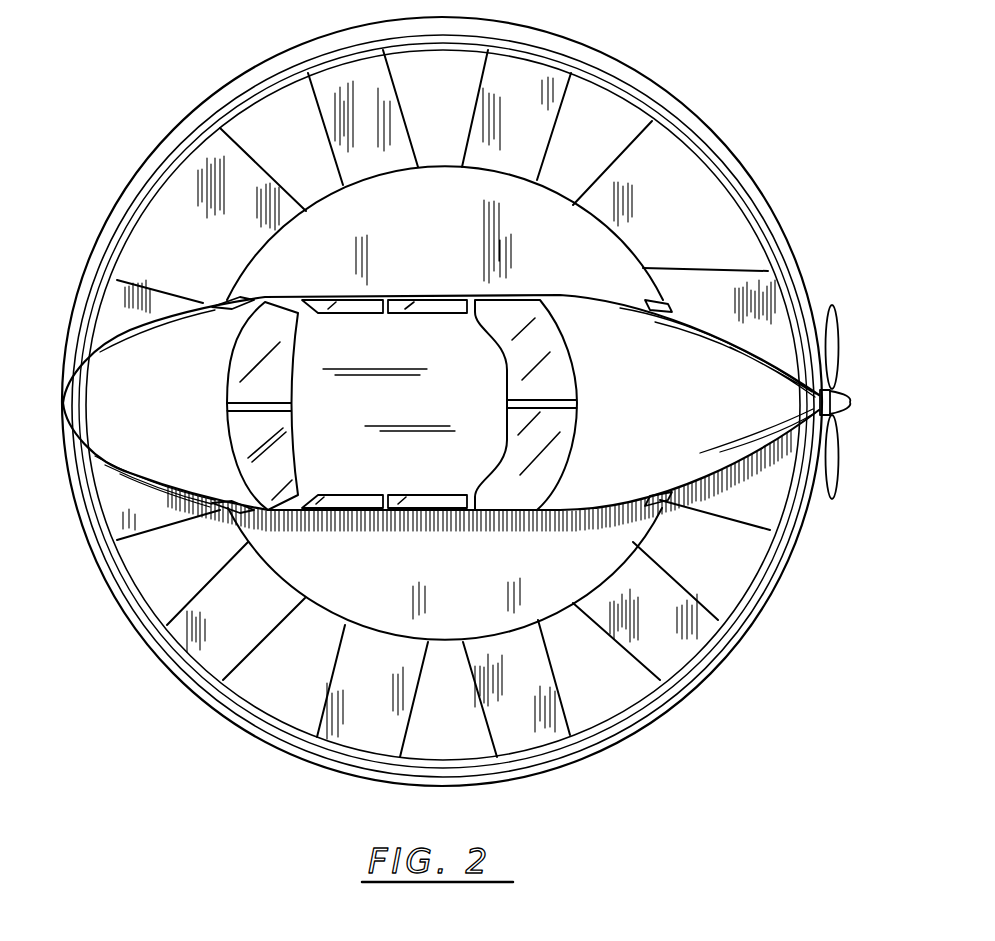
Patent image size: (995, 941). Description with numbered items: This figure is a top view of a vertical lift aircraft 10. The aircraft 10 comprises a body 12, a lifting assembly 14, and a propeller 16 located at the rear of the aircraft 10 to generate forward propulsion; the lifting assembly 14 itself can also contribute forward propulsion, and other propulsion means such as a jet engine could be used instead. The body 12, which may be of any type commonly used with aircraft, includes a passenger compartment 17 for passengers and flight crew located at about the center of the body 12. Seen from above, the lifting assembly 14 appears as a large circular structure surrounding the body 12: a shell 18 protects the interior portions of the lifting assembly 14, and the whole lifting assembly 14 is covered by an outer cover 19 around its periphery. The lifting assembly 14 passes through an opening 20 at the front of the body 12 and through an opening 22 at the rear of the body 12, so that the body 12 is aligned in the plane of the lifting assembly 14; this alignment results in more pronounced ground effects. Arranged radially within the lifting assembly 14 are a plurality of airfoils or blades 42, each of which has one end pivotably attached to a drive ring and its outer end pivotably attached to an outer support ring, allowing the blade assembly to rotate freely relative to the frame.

The vertical lift aircraft 10 is at (704, 78).
The body 12 is at (564, 304).
The lifting assembly 14 is at (740, 162).
The propeller 16 is at (836, 312).
The passenger compartment 17 is at (431, 330).
The shell 18 is at (456, 259).
The outer cover 19 is at (125, 202).
The opening 20 is at (236, 297).
The opening 22 is at (668, 306).
The airfoils or blades 42 is at (370, 745).